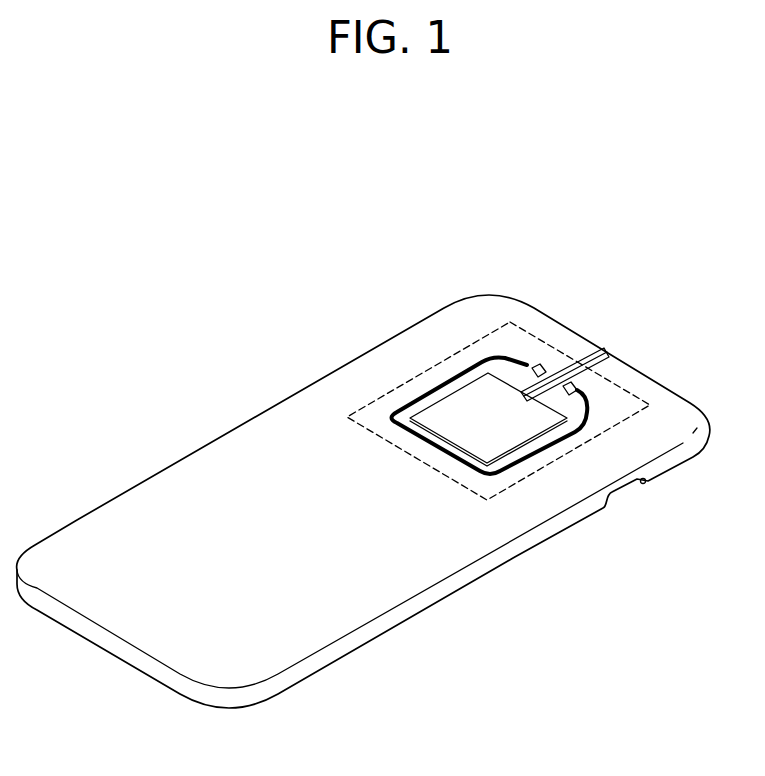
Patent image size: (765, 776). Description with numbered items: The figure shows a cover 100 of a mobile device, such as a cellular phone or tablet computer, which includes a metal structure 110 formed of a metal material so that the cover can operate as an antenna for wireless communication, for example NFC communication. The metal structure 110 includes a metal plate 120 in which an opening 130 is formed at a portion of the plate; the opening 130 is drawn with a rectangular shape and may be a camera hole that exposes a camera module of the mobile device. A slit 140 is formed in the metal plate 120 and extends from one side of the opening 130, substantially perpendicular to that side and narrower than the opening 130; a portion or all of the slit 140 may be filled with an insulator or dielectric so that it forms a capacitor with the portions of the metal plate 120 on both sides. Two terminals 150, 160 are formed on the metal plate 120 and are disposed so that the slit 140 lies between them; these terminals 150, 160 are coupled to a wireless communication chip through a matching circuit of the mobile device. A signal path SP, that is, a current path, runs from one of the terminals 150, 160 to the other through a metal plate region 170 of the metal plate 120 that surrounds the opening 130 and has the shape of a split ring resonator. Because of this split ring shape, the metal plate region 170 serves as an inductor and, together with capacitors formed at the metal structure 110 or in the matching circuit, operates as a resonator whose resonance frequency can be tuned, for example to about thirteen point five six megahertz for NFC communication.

The cover 100 is at (357, 198).
The metal structure 110 is at (700, 393).
The metal plate 120 is at (243, 423).
The opening 130 is at (452, 394).
The slit 140 is at (560, 357).
The terminal 150 is at (543, 365).
The terminal 160 is at (577, 387).
The metal plate region 170 is at (527, 480).
The signal path SP is at (425, 447).